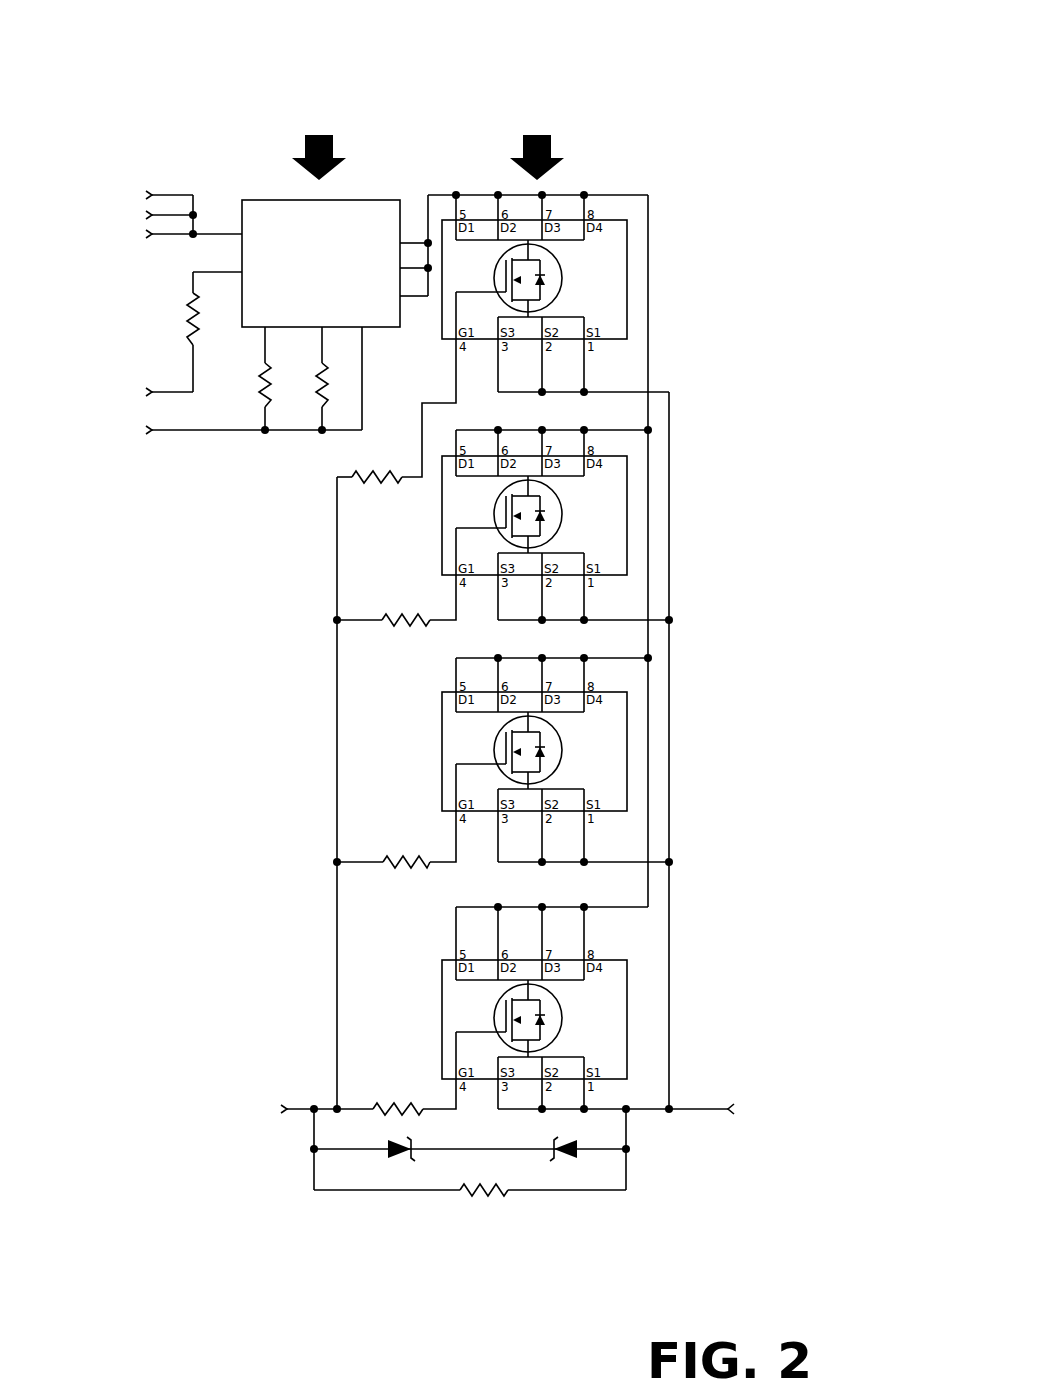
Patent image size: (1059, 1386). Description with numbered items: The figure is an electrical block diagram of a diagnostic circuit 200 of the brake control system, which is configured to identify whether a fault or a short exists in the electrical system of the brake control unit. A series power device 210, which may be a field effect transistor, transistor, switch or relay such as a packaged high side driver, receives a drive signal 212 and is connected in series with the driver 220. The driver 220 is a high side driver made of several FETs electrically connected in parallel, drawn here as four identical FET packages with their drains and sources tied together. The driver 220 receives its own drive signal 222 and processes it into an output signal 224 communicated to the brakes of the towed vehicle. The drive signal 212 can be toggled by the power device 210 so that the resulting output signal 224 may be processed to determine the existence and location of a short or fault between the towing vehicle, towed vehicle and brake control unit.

The diagnostic circuit 200 is at (190, 53).
The power device 210 is at (164, 169).
The drive signal 212 is at (80, 359).
The driver 220 is at (663, 271).
The drive signal 222 is at (196, 1061).
The output signal 224 is at (841, 1049).